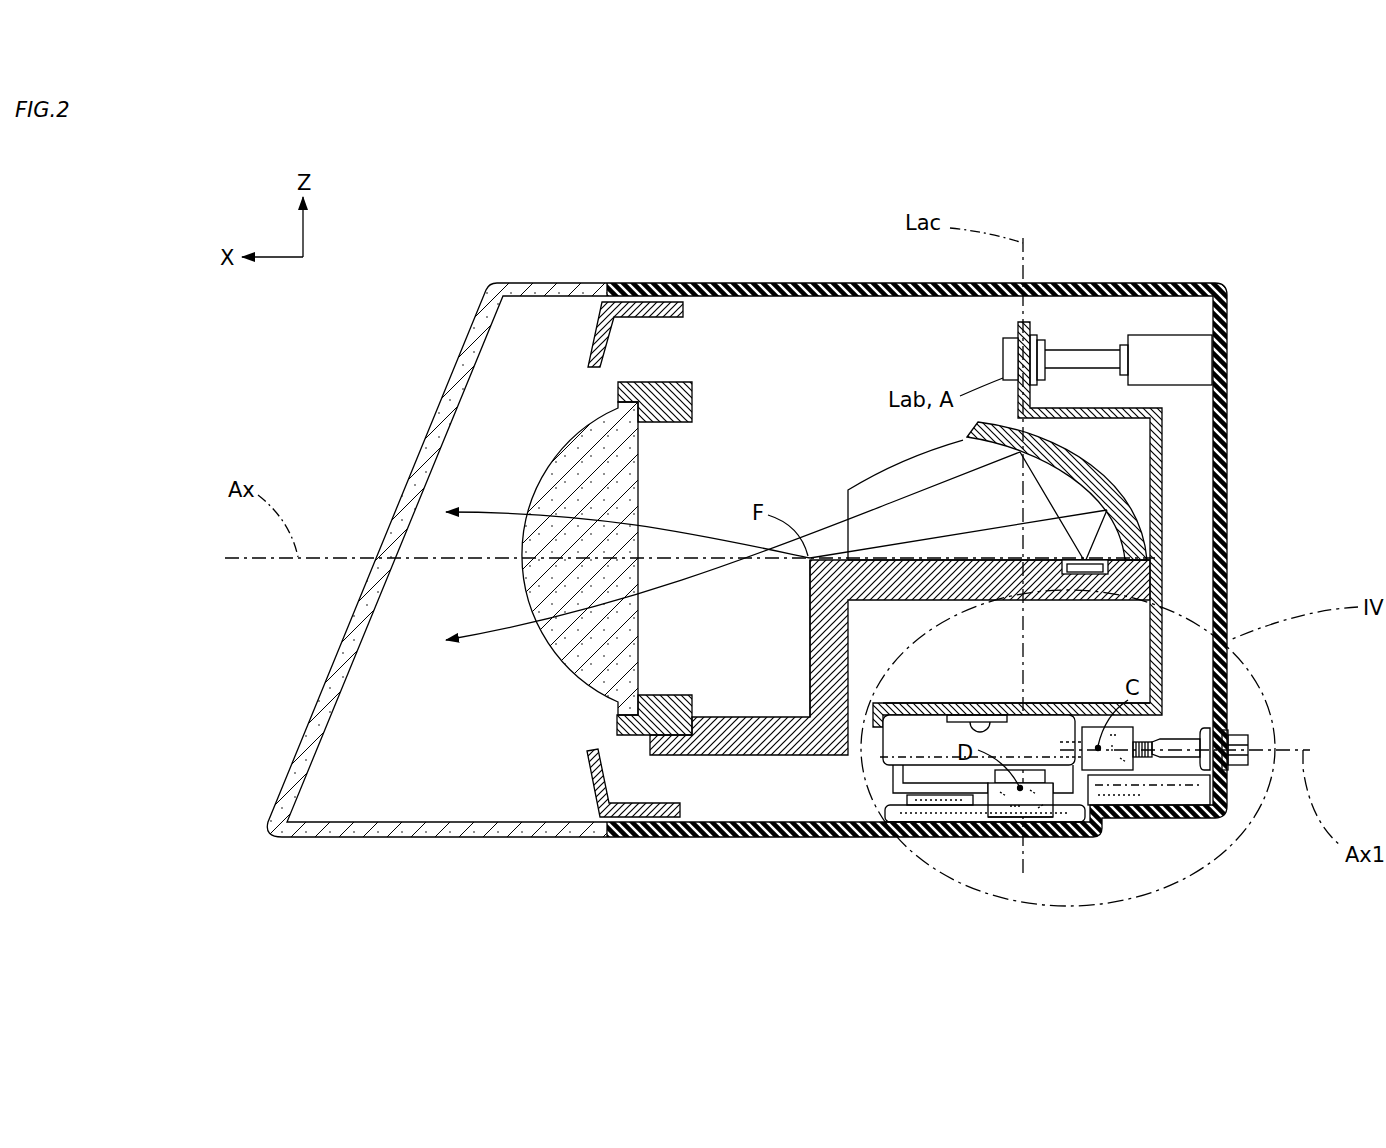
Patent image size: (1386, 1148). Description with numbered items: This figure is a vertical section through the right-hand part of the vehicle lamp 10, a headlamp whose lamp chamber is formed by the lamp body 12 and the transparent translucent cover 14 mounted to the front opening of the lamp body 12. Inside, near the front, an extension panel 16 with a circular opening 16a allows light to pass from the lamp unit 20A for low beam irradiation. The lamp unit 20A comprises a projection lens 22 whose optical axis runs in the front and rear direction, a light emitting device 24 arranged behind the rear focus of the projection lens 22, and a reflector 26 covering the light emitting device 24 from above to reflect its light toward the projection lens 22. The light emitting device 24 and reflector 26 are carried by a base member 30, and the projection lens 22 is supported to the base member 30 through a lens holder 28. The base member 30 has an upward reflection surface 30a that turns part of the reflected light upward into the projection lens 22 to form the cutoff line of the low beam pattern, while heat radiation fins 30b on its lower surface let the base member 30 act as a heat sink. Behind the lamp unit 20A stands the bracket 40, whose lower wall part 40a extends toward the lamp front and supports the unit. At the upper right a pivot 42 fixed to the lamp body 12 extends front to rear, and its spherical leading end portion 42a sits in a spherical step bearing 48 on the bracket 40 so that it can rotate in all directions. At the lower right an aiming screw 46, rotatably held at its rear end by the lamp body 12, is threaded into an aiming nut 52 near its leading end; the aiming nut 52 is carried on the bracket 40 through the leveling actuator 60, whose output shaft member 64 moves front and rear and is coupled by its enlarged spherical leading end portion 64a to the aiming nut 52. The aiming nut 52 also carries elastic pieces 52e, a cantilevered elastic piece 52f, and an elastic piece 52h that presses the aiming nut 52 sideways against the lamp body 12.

The vehicle lamp 10 is at (583, 207).
The lamp body 12 is at (1232, 303).
The translucent cover 14 is at (447, 366).
The extension panel 16 is at (588, 332).
The circular opening 16a is at (592, 750).
The lamp unit for low beam irradiation 20A is at (468, 558).
The projection lens 22 is at (517, 587).
The light emitting device 24 is at (1065, 553).
The reflector 26 is at (1097, 468).
The lens holder 28 is at (697, 389).
The base member 30 is at (933, 625).
The upward reflection surface 30a is at (876, 558).
The heat radiation fins 30b is at (812, 678).
The bracket 40 is at (1096, 524).
The lower wall part 40a is at (998, 703).
The pivot 42 is at (1058, 315).
The leading end portion 42a is at (1008, 352).
The aiming screw 46 is at (1176, 760).
The spherical step bearing 48 is at (1002, 340).
The aiming nut 52 is at (1077, 806).
The elastic piece 52e is at (1122, 808).
The elastic piece 52f is at (1040, 818).
The elastic piece 52h is at (915, 855).
The leveling actuator 60 is at (882, 762).
The output shaft member 64 is at (1022, 785).
The leading end portion 64a is at (1088, 834).